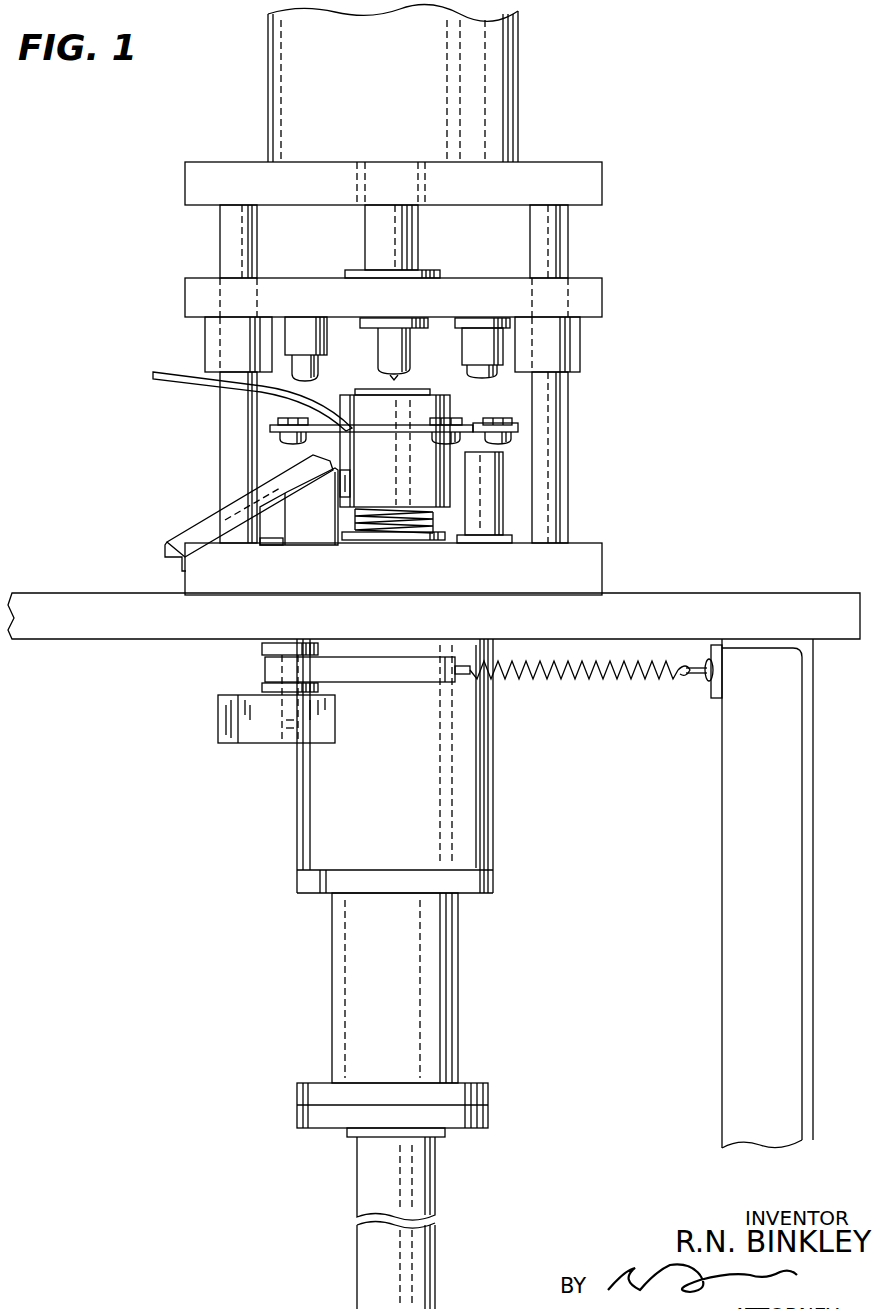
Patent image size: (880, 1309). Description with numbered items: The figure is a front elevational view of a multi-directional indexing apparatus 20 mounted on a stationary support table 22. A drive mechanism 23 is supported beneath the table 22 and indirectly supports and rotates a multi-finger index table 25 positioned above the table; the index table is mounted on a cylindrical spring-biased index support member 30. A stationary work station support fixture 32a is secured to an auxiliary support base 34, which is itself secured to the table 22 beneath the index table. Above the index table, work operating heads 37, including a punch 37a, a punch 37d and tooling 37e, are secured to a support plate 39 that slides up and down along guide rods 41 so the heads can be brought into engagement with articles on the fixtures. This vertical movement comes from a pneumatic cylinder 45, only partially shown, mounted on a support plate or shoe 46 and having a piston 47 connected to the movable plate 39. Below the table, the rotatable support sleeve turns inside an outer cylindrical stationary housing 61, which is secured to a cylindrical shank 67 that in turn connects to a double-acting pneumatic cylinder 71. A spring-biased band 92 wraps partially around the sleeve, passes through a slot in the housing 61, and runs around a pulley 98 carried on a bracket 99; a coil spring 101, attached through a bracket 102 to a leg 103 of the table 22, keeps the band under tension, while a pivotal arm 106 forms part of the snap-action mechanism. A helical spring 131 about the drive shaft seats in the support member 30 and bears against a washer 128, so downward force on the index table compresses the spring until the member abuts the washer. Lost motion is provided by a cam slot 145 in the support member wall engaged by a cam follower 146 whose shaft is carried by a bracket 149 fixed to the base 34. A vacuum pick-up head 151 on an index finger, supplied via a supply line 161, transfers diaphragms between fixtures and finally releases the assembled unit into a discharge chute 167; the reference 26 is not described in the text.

The multi-directional indexing apparatus 20 is at (580, 441).
The stationary support table 22 is at (647, 604).
The drive mechanism 23 is at (505, 782).
The multi-finger index table 25 is at (526, 415).
The press head 26 is at (192, 265).
The index support member 30 is at (373, 492).
The stationary work station support fixture 32a is at (497, 498).
The auxiliary support base 34 is at (577, 560).
The work operating heads 37 is at (313, 366).
The punch 37a is at (483, 379).
The punch 37d is at (409, 374).
The punch 37e is at (322, 377).
The support plate 39 is at (593, 288).
The guide rods 41 is at (555, 222).
The pneumatic cylinder 45 is at (298, 103).
The support plate or shoe 46 is at (188, 182).
The piston 47 is at (370, 248).
The outer cylindrical stationary housing 61 is at (480, 852).
The cylindrical shank 67 is at (348, 960).
The pneumatic cylinder 71 is at (368, 1182).
The spring-biased band 92 is at (377, 677).
The pulley 98 is at (262, 648).
The bracket 99 is at (268, 732).
The coil spring 101 is at (578, 678).
The bracket 102 is at (707, 683).
The leg 103 is at (745, 773).
The pivotal arm 106 is at (228, 713).
The washer 128 is at (433, 538).
The helical spring 131 is at (400, 518).
The cam slot 145 is at (307, 462).
The cam follower 146 is at (332, 492).
The bracket 149 is at (307, 538).
The vacuum pick-up head 151 is at (277, 443).
The supply line 161 is at (167, 378).
The discharge chute 167 is at (192, 527).